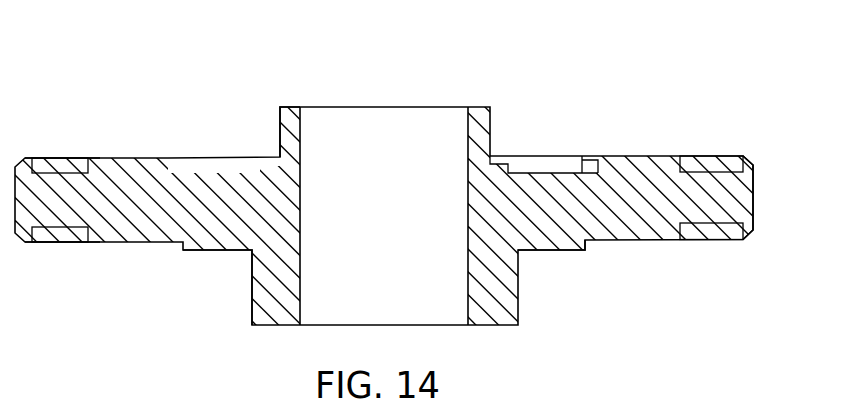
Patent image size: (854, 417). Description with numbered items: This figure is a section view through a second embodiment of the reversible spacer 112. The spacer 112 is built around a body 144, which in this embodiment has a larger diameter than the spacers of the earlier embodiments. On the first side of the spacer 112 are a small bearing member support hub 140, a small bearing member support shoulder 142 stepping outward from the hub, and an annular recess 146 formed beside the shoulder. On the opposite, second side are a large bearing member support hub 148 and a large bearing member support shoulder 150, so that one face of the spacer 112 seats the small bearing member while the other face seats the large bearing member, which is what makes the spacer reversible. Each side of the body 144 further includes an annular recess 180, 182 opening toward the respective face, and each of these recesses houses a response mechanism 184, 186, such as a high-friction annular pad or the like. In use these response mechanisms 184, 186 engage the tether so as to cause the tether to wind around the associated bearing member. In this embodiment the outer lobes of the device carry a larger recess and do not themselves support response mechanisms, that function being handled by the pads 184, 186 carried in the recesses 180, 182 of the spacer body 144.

The reversible spacer 112 is at (626, 64).
The small bearing member support hub 140 is at (281, 120).
The small bearing member support shoulder 142 is at (507, 163).
The body 144 is at (755, 202).
The annular recess 146 is at (585, 160).
The large bearing member support hub 148 is at (250, 315).
The large bearing member support shoulder 150 is at (570, 250).
The annular recess 180 is at (77, 165).
The annular recess 182 is at (78, 243).
The response mechanism 184 is at (60, 158).
The response mechanism 186 is at (43, 243).